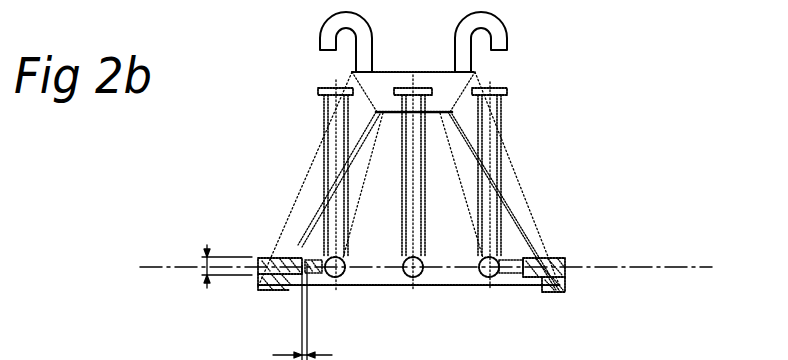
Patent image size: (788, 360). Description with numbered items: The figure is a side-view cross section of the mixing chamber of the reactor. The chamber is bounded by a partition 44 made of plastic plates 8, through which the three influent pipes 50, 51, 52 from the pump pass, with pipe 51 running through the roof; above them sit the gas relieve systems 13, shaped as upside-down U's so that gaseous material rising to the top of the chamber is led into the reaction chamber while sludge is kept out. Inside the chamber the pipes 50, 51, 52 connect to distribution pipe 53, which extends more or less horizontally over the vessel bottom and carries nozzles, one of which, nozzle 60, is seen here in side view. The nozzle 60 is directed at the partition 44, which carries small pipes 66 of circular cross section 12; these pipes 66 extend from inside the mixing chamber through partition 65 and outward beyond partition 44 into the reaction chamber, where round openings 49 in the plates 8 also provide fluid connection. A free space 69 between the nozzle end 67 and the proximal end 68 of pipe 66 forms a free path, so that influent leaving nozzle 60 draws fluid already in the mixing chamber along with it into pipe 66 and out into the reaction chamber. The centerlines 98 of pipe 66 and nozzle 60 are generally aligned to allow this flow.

The plates 8 is at (312, 182).
The circular cross sections 12 is at (212, 265).
The gas relieve system 13 is at (459, 36).
The partition 44 is at (522, 178).
The round openings 49 is at (571, 276).
The pipe 50 is at (326, 107).
The pipe 51 is at (413, 71).
The pipe 52 is at (493, 112).
The distribution pipe 53 is at (345, 272).
The nozzle 60 is at (318, 258).
The partition 65 is at (267, 282).
The pipes 66 is at (282, 258).
The nozzle end 67 is at (512, 256).
The proximal end 68 is at (534, 252).
The free space 69 is at (311, 344).
The centerlines 98 is at (697, 267).